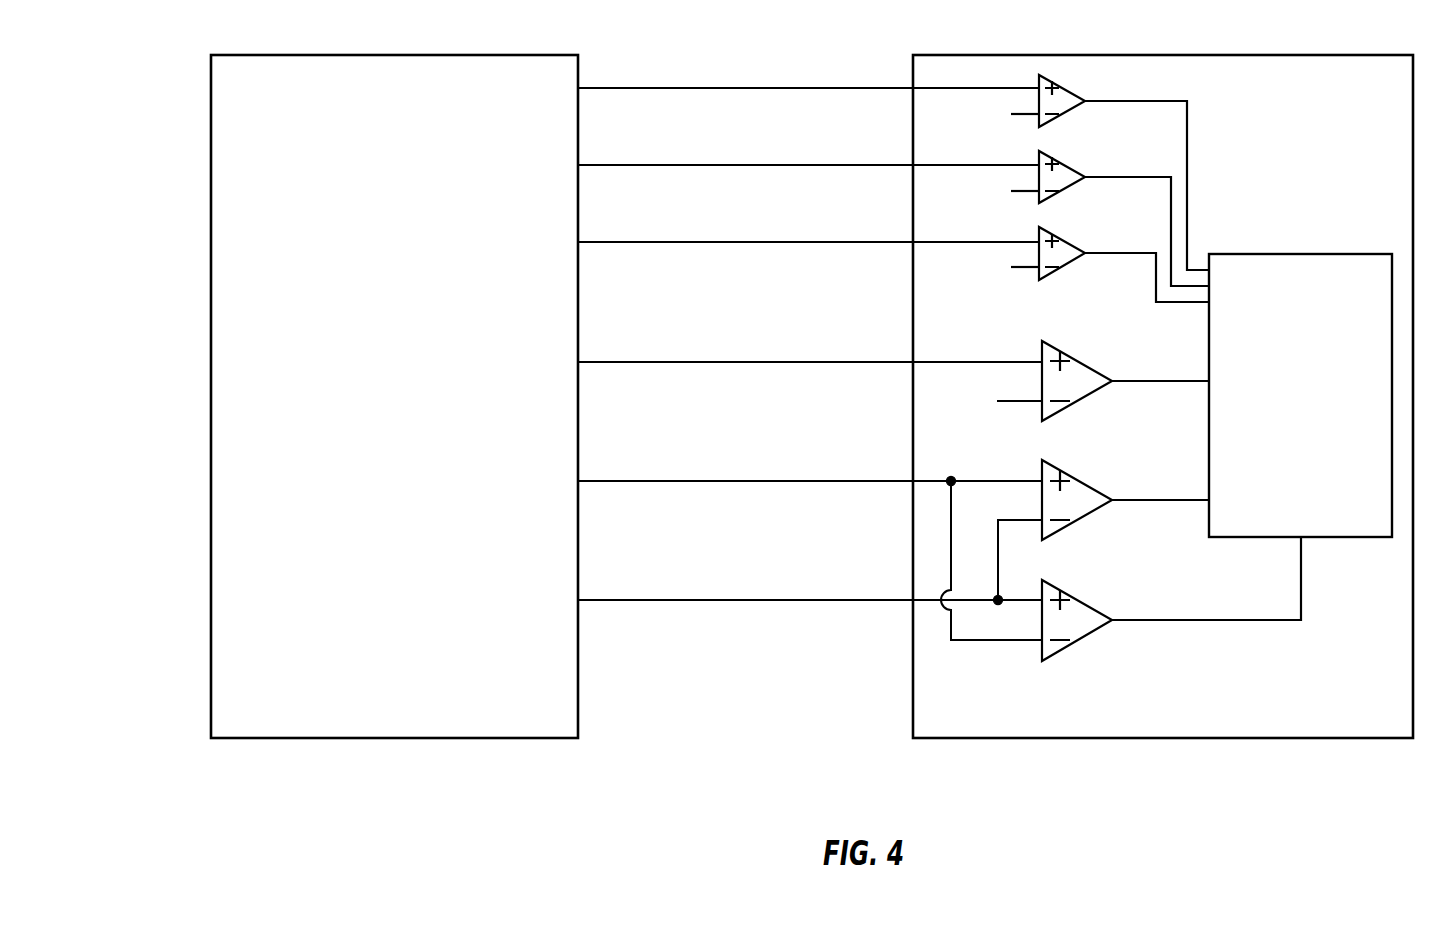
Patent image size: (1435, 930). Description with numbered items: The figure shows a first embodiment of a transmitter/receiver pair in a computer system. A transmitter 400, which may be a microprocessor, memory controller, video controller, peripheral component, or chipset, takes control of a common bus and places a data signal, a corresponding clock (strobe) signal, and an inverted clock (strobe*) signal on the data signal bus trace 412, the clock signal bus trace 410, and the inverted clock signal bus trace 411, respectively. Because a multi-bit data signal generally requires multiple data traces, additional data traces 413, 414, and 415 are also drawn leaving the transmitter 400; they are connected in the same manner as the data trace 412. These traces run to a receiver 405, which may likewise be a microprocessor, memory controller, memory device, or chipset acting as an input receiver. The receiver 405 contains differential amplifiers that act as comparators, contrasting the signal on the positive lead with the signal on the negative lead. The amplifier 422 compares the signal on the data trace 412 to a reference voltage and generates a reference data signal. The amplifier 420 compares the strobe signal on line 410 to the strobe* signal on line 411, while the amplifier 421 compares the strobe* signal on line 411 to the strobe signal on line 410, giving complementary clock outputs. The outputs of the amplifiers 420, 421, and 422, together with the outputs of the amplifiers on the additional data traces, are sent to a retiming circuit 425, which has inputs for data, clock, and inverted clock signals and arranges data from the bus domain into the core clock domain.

The transmitter 400 is at (418, 437).
The receiver 405 is at (1154, 718).
The retiming circuit 425 is at (1326, 452).
The data trace 415 is at (791, 88).
The data trace 414 is at (791, 165).
The data trace 413 is at (791, 242).
The data signal bus trace 412 is at (793, 362).
The clock signal bus trace 410 is at (793, 481).
The inverted clock signal bus trace 411 is at (793, 600).
The amplifier 422 is at (1078, 360).
The amplifier 420 is at (1078, 479).
The amplifier 421 is at (1078, 599).